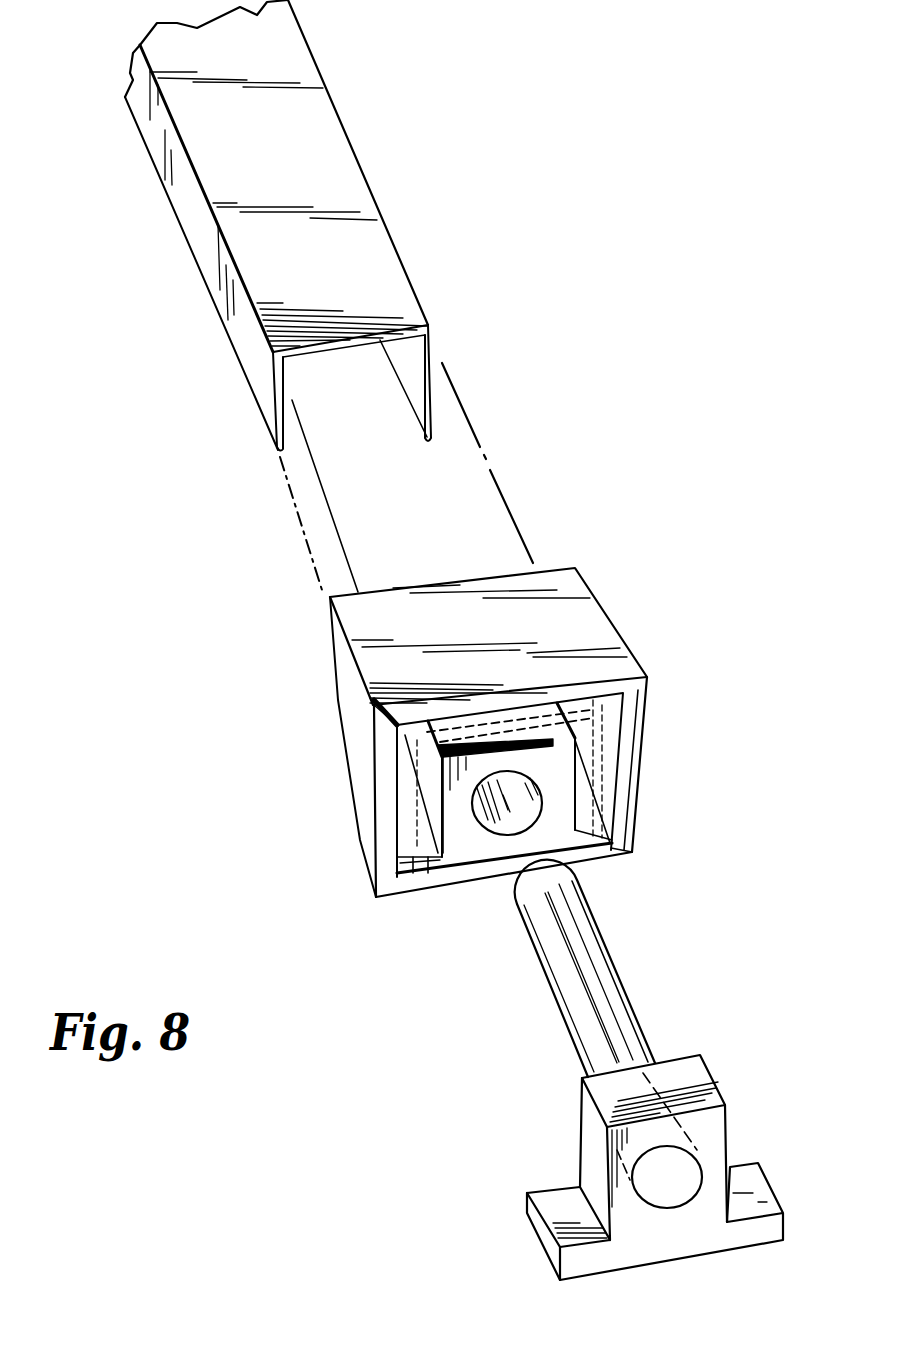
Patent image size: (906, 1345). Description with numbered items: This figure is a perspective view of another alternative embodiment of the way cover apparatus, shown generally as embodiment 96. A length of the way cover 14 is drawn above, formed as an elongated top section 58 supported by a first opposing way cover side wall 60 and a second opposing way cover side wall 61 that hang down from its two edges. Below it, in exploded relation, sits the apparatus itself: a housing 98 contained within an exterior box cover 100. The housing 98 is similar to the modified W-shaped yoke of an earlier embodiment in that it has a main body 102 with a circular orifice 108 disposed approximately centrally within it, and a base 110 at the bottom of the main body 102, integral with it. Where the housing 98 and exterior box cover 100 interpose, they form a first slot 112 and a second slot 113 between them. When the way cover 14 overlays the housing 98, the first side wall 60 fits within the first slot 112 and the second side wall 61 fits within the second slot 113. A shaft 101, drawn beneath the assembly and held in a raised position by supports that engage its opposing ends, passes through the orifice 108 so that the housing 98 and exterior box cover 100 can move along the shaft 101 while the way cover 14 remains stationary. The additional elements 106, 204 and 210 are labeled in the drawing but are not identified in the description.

The way cover 14 is at (333, 155).
The elongated top section 58 is at (393, 278).
The first opposing way cover side wall 60 is at (248, 335).
The second opposing way cover side wall 61 is at (430, 363).
The apparatus embodiment 96 is at (345, 807).
The housing 98 is at (460, 843).
The exterior box cover 100 is at (362, 823).
The shaft 101 is at (612, 997).
The main body 102 is at (430, 777).
The front wall of bracket 106 is at (490, 848).
The circular orifice 108 is at (518, 810).
The base 110 is at (413, 880).
The first slot 112 is at (433, 880).
The second slot 113 is at (612, 847).
The top plate of bracket 204 is at (560, 735).
The lower edge of flange 210 is at (597, 848).